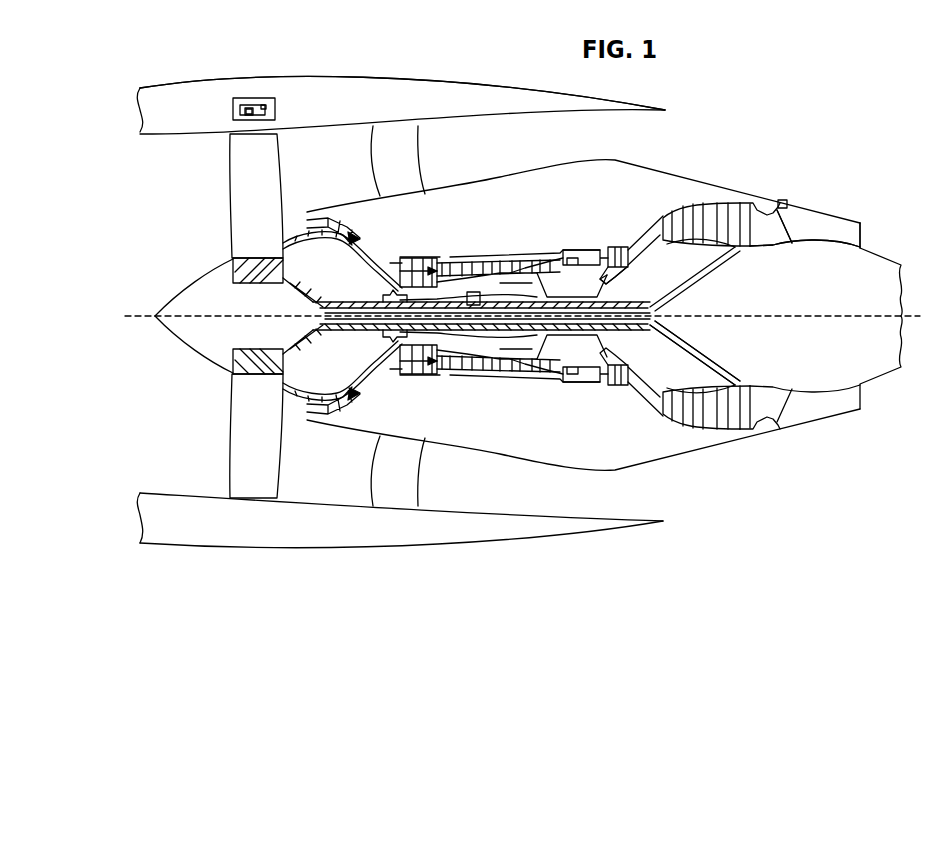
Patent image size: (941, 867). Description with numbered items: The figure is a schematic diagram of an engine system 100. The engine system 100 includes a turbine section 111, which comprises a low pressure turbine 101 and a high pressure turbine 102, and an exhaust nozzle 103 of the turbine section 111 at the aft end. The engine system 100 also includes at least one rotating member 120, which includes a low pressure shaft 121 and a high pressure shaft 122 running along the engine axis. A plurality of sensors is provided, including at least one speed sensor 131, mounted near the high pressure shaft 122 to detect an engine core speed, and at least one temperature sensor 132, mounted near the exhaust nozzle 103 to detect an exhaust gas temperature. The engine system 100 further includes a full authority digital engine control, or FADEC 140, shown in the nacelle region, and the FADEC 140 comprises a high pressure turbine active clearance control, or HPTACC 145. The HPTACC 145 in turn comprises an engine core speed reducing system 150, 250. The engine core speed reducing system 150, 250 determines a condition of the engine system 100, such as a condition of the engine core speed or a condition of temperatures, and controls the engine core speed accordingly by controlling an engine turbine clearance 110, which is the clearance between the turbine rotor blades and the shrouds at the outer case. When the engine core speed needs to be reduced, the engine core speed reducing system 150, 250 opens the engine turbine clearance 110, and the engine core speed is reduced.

The engine system 100 is at (433, 62).
The low pressure turbine 101 is at (693, 207).
The high pressure turbine 102 is at (618, 246).
The exhaust nozzle 103 is at (820, 225).
The engine turbine clearance 110 is at (603, 249).
The turbine section 111 is at (661, 204).
The rotating member 120 is at (510, 291).
The low pressure shaft 121 is at (668, 320).
The high pressure shaft 122 is at (612, 285).
The speed sensor 131 is at (472, 292).
The temperature sensor 132 is at (786, 200).
The full authority digital engine control (FADEC) 140 is at (255, 98).
The high pressure turbine active clearance control (HPTACC) 145 is at (263, 103).
The engine core speed reducing system 150 is at (248, 104).
The engine core speed reducing system 250 is at (249, 111).